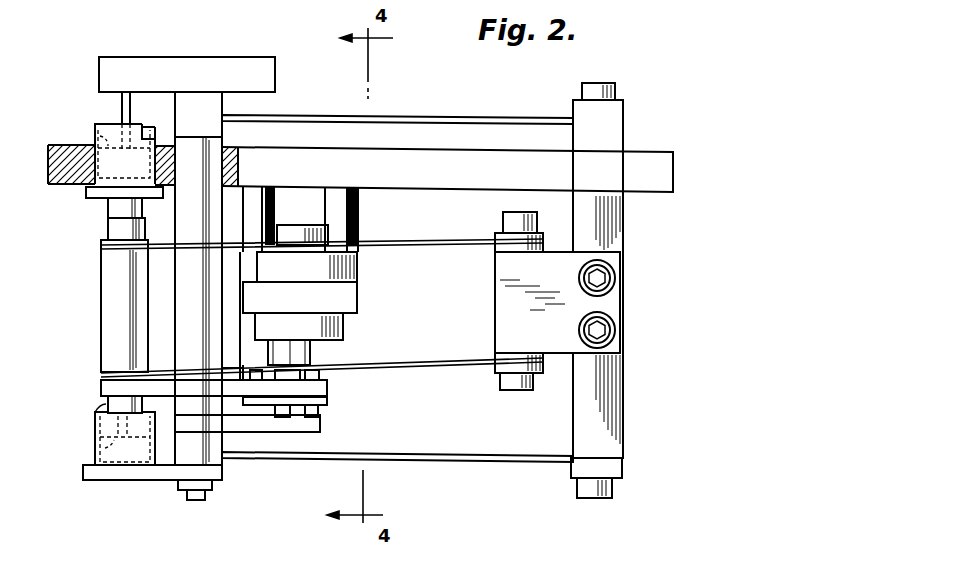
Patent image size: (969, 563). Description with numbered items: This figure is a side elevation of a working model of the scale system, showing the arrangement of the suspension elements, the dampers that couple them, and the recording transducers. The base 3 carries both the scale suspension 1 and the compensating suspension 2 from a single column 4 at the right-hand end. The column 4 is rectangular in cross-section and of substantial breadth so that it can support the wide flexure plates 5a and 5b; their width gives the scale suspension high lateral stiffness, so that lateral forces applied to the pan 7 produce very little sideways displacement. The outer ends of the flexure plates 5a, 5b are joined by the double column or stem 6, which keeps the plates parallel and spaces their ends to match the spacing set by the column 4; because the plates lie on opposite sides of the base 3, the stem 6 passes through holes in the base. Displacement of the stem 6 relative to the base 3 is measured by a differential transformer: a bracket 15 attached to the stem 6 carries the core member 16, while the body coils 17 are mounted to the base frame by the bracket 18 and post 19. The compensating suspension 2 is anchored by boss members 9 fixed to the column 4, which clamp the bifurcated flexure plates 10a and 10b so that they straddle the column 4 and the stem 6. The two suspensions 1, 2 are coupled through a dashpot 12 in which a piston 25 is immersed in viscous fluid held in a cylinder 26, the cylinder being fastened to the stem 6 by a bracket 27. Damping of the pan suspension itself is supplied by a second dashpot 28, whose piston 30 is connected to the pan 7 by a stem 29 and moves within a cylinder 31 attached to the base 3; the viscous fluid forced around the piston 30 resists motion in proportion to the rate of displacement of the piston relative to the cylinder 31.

The scale suspension 1 is at (240, 477).
The compensating suspension 2 is at (93, 280).
The base 3 is at (673, 177).
The column 4 is at (623, 410).
The flexure plate 5a is at (476, 110).
The flexure plate 5b is at (470, 459).
The stem 6 is at (175, 297).
The pan 7 is at (270, 57).
The boss member 9 is at (563, 355).
The flexure plate 10a is at (433, 251).
The flexure plate 10b is at (415, 362).
The dashpot 12 is at (88, 428).
The bracket 15 is at (313, 434).
The core member 16 is at (310, 354).
The body coils 17 is at (343, 327).
The bracket 18 is at (353, 299).
The post 19 is at (360, 217).
The piston 25 is at (105, 448).
The cylinder 26 is at (95, 404).
The bracket 27 is at (129, 481).
The dashpot 28 is at (88, 120).
The stem 29 is at (121, 108).
The piston 30 is at (98, 133).
The cylinder 31 is at (143, 126).